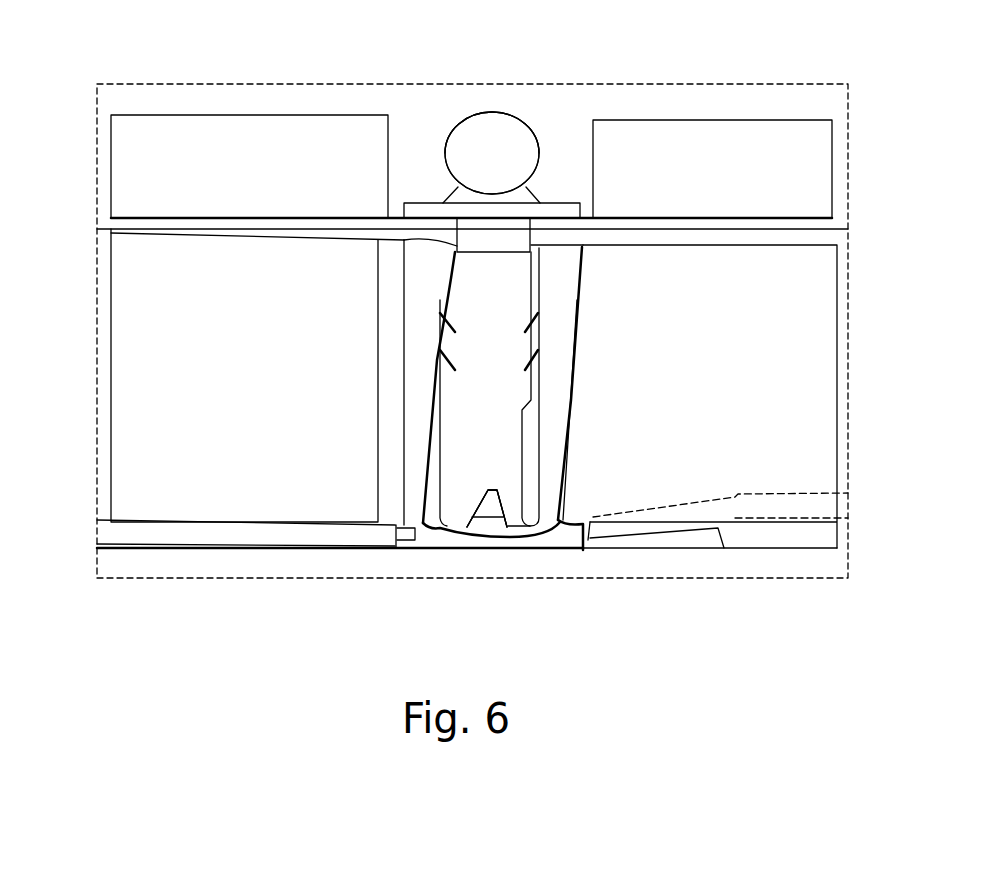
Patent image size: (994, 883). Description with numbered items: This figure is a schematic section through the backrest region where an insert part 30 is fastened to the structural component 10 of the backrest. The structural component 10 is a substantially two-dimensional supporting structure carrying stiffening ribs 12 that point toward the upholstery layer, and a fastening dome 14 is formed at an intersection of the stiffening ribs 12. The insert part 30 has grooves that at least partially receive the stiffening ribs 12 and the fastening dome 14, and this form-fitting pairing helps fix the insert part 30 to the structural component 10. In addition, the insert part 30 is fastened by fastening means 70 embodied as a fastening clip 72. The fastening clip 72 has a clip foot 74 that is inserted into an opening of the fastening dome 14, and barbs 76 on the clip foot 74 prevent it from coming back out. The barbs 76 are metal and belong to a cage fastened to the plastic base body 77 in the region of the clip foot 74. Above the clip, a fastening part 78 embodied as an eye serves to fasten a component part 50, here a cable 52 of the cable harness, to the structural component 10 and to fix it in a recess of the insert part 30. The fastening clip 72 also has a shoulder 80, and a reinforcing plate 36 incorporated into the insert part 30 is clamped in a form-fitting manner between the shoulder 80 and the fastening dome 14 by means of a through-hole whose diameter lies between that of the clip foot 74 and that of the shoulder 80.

The structural component 10 is at (245, 535).
The stiffening ribs 12 is at (100, 300).
The fastening dome 14 is at (560, 270).
The insert part 30 is at (808, 322).
The reinforcing plate 36 is at (782, 228).
The component part 50 is at (508, 128).
The cable 52 is at (508, 128).
The fastening means 70 is at (465, 482).
The fastening clip 72 is at (465, 482).
The clip foot 74 is at (520, 457).
The barbs 76 is at (542, 353).
The base body 77 is at (492, 467).
The fastening part 78 is at (487, 112).
The shoulder 80 is at (432, 205).